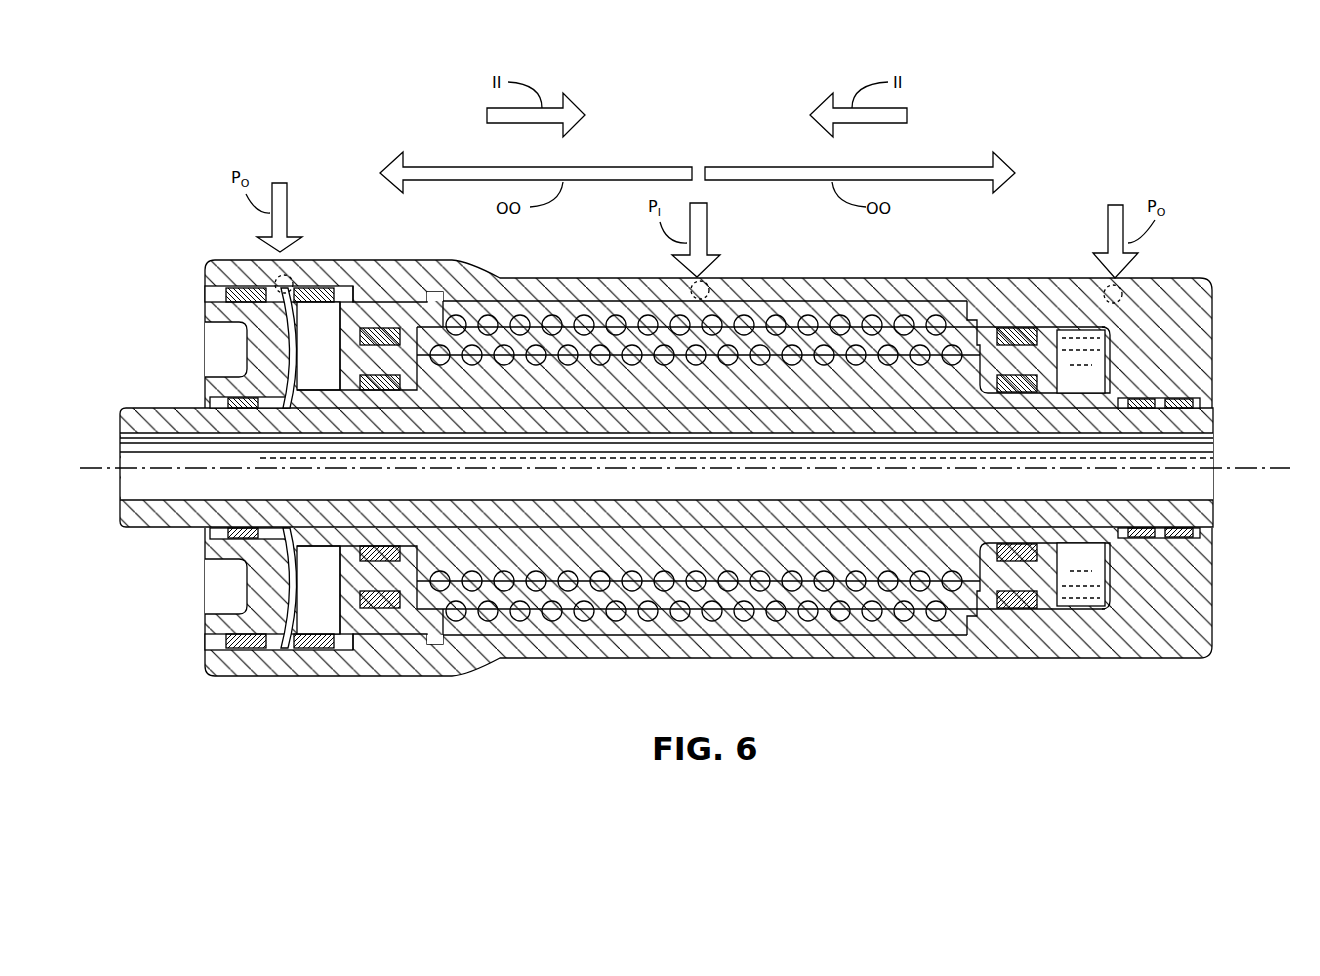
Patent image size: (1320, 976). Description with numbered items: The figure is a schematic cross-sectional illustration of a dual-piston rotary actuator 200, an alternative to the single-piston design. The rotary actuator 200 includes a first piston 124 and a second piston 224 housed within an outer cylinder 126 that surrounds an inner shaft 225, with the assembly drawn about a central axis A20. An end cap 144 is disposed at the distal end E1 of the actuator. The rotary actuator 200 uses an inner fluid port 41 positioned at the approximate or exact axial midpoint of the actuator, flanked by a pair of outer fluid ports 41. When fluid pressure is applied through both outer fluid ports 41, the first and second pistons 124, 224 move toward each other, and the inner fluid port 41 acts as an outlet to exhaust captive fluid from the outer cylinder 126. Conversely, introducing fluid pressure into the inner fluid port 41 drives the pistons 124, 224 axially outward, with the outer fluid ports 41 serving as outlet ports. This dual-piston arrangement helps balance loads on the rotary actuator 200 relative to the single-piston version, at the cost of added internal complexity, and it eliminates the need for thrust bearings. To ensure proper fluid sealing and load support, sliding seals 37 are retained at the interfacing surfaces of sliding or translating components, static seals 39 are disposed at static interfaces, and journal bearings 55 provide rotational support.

The dual-piston rotary actuator 200 is at (1152, 105).
The inner shaft 225 is at (163, 420).
The outer cylinder 126 is at (238, 268).
The second piston 224 is at (977, 322).
The end cap 144 is at (263, 347).
The first piston 124 is at (462, 283).
The sliding seals 37 is at (207, 557).
The static seals 39 is at (313, 648).
The journal bearings 55 is at (1133, 393).
The fluid port 41 is at (290, 280).
The distal end E1 is at (149, 269).
The central axis A20 is at (1240, 468).